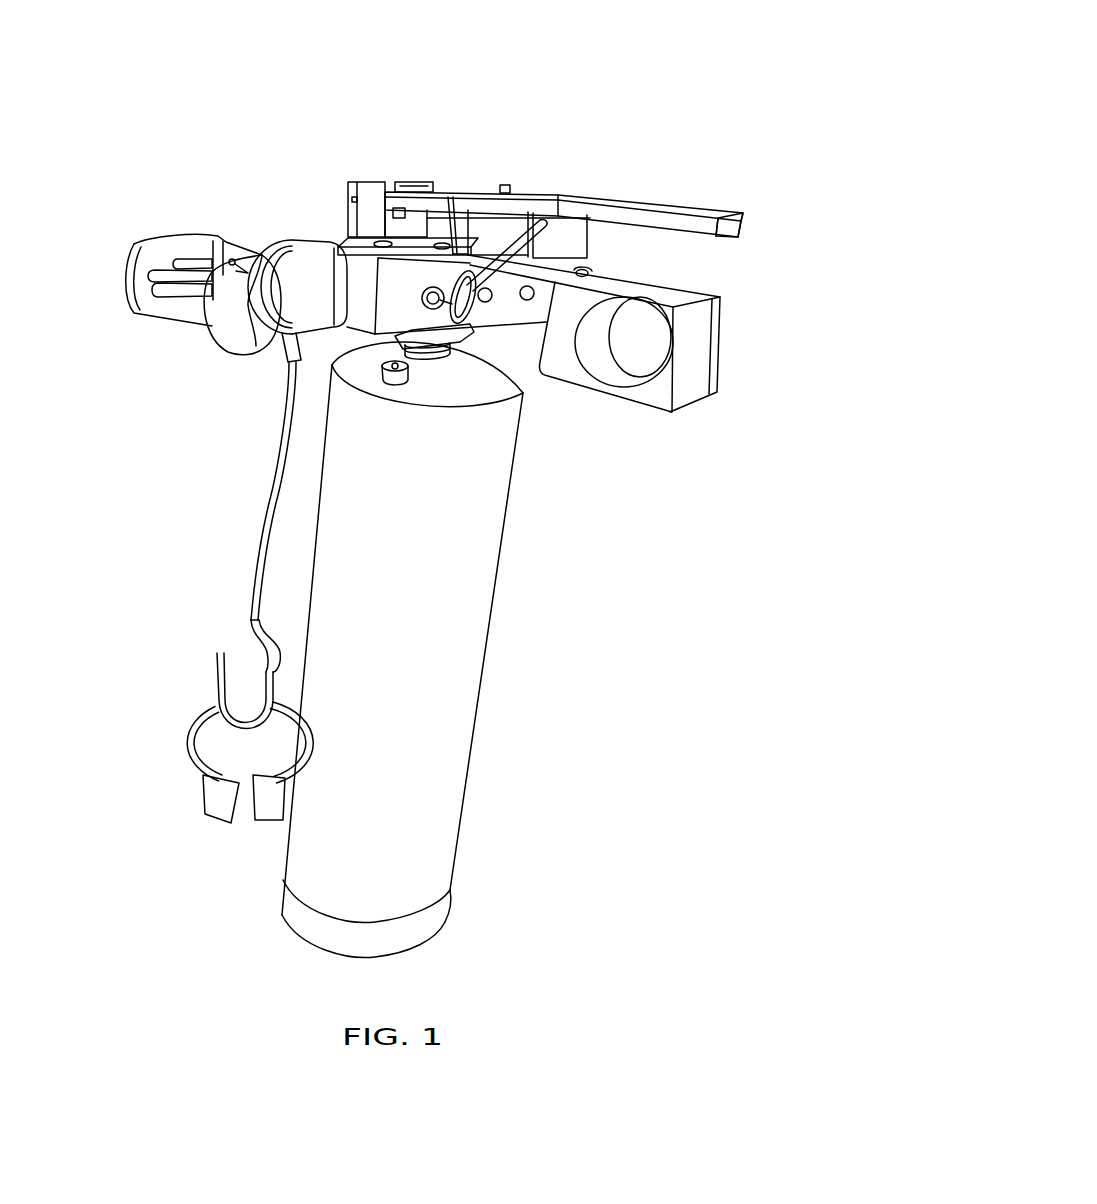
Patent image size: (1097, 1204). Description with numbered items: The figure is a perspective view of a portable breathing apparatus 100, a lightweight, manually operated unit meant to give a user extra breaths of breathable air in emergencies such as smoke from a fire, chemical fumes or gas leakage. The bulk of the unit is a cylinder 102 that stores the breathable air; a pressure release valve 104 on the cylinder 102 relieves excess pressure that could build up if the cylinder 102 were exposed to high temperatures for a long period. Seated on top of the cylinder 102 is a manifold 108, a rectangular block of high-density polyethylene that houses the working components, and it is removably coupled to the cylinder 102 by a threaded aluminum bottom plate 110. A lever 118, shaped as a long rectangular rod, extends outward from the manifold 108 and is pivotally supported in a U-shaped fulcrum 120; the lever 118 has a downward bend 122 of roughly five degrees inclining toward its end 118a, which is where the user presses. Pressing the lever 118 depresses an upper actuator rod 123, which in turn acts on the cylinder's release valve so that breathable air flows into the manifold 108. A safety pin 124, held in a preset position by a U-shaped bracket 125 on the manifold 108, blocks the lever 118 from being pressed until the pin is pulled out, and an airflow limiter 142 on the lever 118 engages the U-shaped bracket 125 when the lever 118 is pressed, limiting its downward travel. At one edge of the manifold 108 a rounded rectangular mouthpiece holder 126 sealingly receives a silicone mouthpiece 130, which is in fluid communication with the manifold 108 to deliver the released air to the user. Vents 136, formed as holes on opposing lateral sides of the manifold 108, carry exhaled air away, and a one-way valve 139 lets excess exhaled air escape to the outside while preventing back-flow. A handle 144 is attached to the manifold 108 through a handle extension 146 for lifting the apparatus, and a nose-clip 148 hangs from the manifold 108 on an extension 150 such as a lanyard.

The breathing apparatus 100 is at (657, 94).
The cylinder 102 is at (513, 473).
The pressure release valve 104 is at (360, 345).
The manifold 108 is at (338, 215).
The bottom plate 110 is at (520, 394).
The lever 118 is at (583, 208).
The end 118a is at (733, 229).
The fulcrum 120 is at (400, 182).
The downward bend 122 is at (673, 206).
The upper actuator rod 123 is at (450, 208).
The safety pin 124 is at (397, 237).
The U-shaped bracket 125 is at (492, 218).
The mouthpiece holder 126 is at (340, 238).
The mouthpiece 130 is at (130, 257).
The vents 136 is at (453, 302).
The one-way valve 139 is at (392, 244).
The airflow limiter 142 is at (508, 185).
The handle 144 is at (705, 372).
The handle extension 146 is at (582, 273).
The nose-clip 148 is at (190, 738).
The extension 150 is at (262, 507).